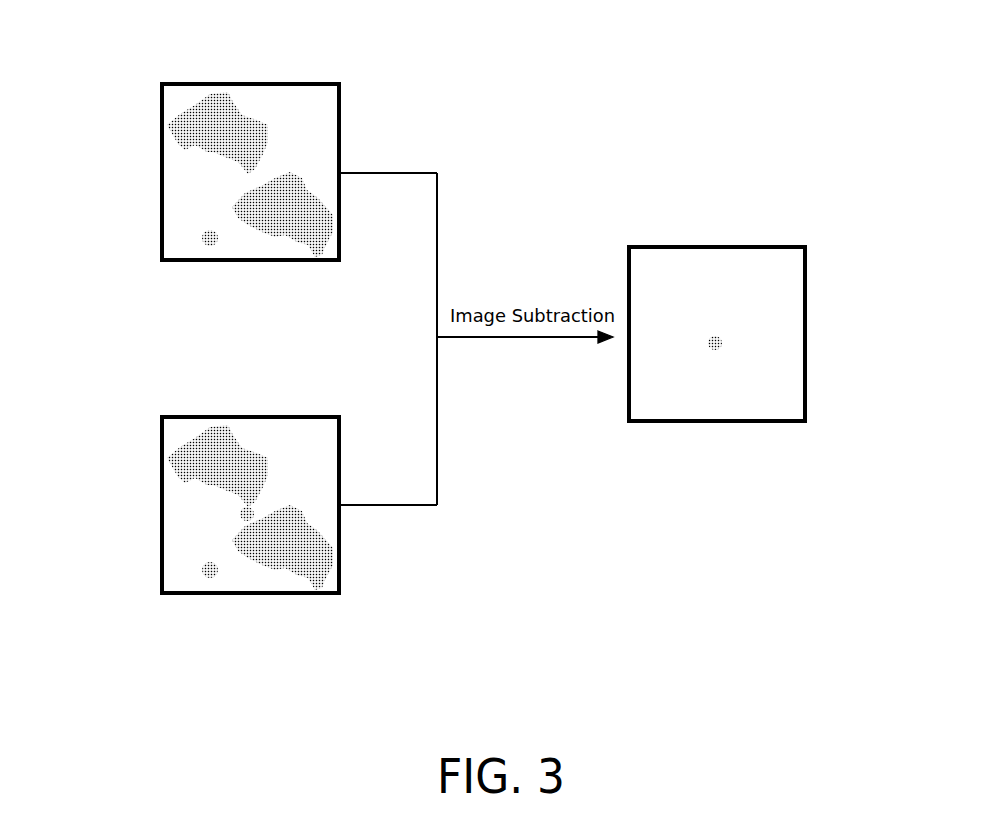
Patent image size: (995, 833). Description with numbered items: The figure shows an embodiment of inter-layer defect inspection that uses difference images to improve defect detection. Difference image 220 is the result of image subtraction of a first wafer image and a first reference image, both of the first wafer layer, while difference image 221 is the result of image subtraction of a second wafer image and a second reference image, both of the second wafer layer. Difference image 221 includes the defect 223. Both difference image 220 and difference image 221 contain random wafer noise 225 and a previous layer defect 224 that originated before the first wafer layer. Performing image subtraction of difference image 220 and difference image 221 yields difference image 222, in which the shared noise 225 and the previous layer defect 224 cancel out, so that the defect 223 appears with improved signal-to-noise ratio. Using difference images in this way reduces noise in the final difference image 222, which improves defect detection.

The difference image 220 is at (287, 82).
The difference image 221 is at (287, 415).
The difference image 222 is at (740, 245).
The defect 223 is at (243, 517).
The previous layer defect 224 is at (208, 239).
The random wafer noise 225 is at (207, 135).